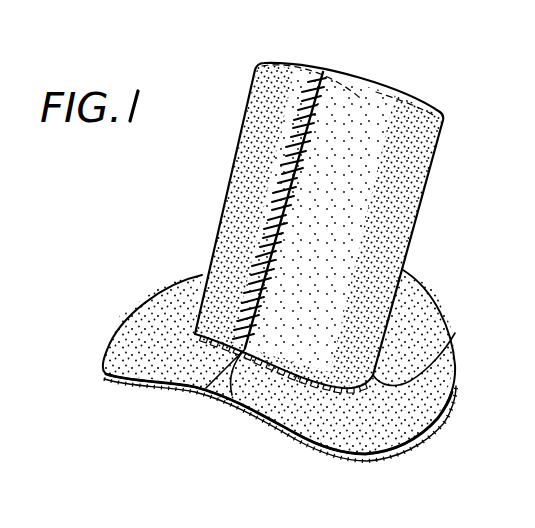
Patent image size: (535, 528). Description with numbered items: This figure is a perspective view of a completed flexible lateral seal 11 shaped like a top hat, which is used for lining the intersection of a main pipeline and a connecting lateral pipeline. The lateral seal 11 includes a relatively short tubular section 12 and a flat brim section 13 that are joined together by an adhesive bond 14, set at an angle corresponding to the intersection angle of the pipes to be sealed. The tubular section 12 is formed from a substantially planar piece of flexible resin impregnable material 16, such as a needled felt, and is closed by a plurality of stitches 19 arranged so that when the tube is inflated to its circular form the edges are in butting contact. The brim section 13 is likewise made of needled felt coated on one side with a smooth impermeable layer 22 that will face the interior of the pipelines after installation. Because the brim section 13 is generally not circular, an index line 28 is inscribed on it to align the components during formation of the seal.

The lateral seal 11 is at (212, 188).
The tubular section 12 is at (390, 84).
The brim section 13 is at (427, 283).
The adhesive bond 14 is at (455, 331).
The resin impregnable material 16 is at (381, 211).
The stitches 19 is at (322, 74).
The smooth impermeable layer 22 is at (424, 433).
The index line 28 is at (235, 404).